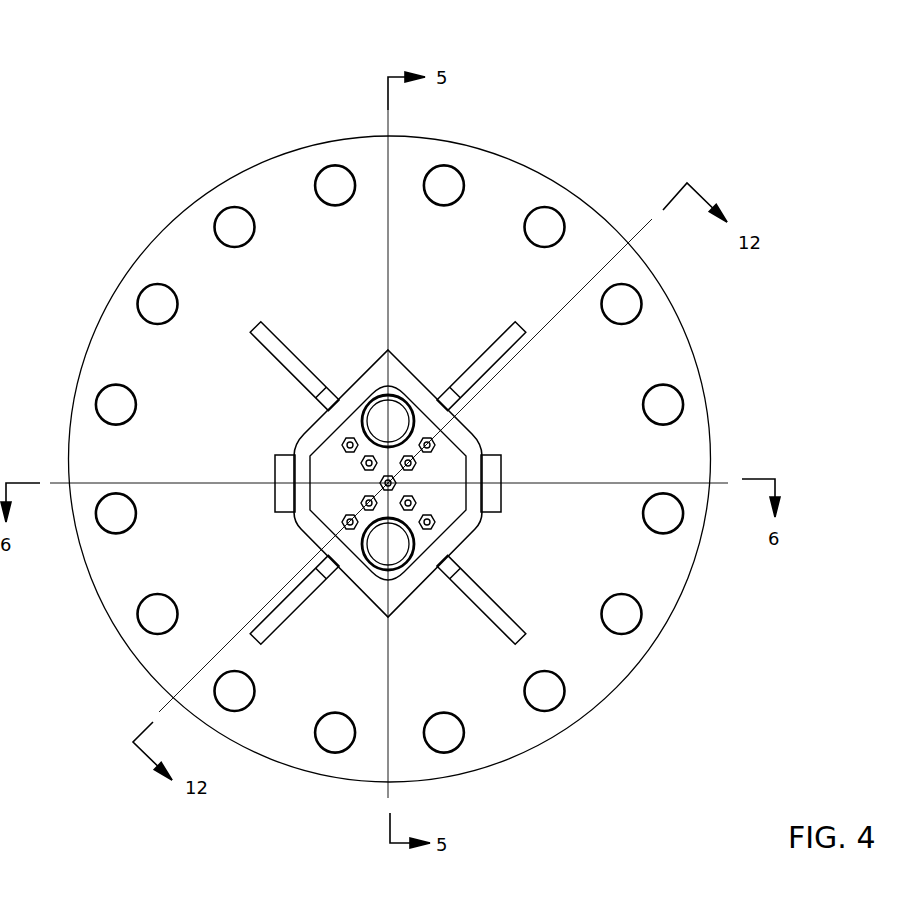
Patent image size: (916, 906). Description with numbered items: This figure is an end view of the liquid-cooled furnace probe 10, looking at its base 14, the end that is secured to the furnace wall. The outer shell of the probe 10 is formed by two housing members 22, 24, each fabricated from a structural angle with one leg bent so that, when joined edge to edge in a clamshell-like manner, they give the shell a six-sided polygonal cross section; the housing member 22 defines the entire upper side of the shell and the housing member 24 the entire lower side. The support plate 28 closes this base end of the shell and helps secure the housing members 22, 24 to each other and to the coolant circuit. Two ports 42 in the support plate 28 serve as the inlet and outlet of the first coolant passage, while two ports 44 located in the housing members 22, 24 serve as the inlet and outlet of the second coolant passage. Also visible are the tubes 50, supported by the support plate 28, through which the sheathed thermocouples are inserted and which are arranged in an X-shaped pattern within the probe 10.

The probe 10 is at (689, 93).
The base 14 is at (160, 252).
The housing member 22 is at (367, 382).
The housing member 24 is at (467, 533).
The support plate 28 is at (325, 455).
The ports 42 is at (403, 412).
The ports 44 is at (493, 467).
The tubes 50 is at (363, 500).